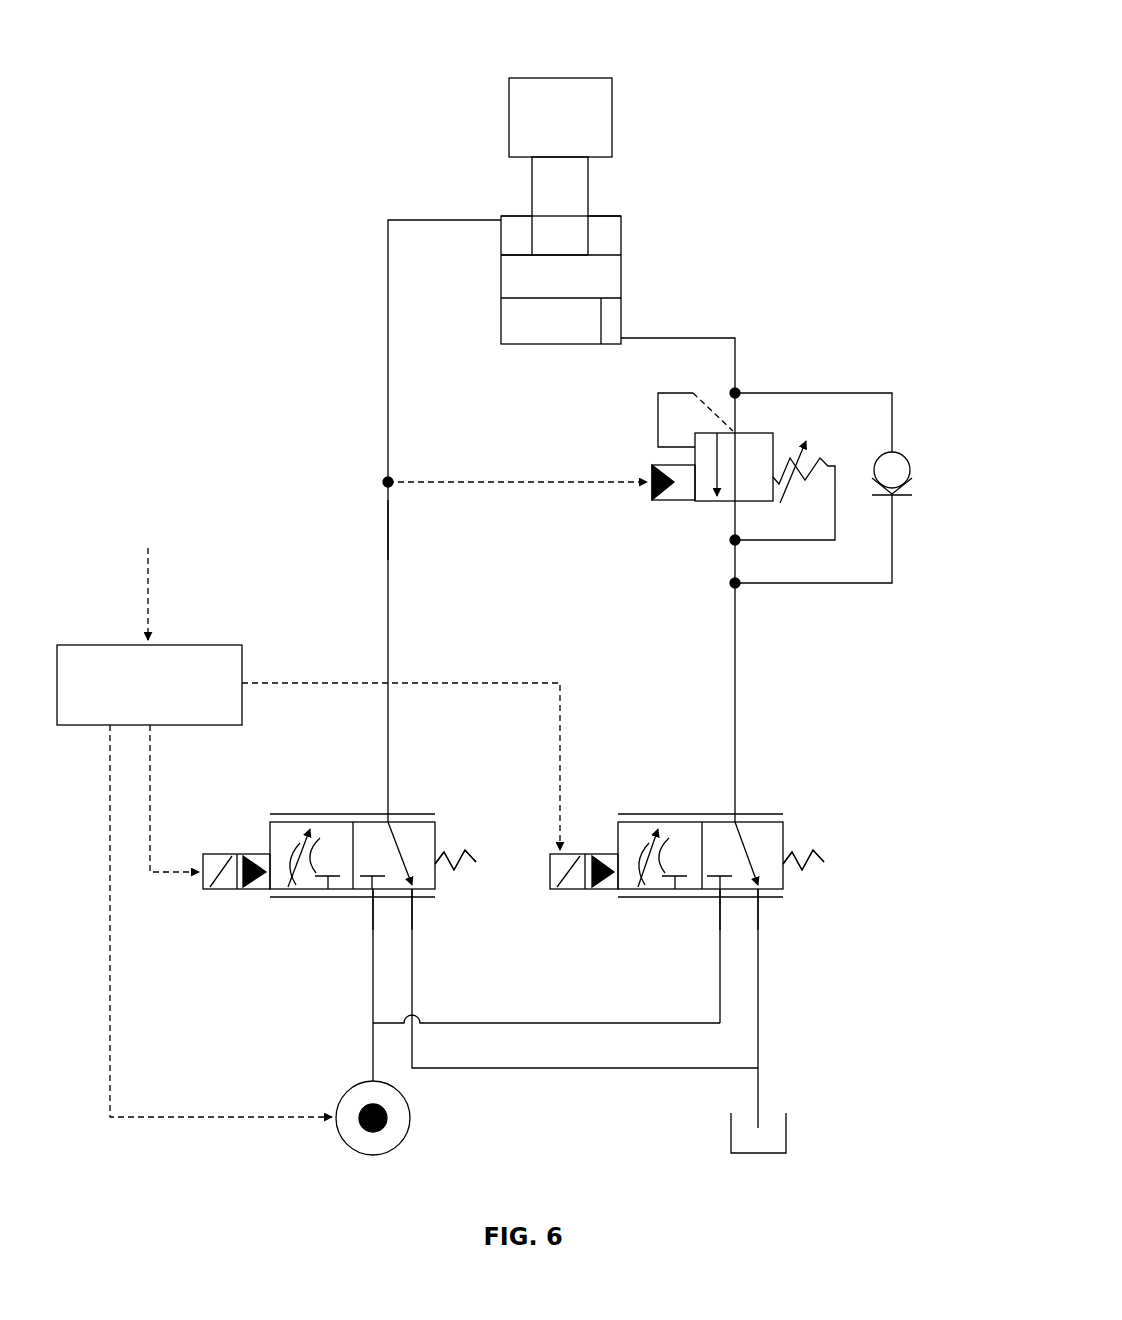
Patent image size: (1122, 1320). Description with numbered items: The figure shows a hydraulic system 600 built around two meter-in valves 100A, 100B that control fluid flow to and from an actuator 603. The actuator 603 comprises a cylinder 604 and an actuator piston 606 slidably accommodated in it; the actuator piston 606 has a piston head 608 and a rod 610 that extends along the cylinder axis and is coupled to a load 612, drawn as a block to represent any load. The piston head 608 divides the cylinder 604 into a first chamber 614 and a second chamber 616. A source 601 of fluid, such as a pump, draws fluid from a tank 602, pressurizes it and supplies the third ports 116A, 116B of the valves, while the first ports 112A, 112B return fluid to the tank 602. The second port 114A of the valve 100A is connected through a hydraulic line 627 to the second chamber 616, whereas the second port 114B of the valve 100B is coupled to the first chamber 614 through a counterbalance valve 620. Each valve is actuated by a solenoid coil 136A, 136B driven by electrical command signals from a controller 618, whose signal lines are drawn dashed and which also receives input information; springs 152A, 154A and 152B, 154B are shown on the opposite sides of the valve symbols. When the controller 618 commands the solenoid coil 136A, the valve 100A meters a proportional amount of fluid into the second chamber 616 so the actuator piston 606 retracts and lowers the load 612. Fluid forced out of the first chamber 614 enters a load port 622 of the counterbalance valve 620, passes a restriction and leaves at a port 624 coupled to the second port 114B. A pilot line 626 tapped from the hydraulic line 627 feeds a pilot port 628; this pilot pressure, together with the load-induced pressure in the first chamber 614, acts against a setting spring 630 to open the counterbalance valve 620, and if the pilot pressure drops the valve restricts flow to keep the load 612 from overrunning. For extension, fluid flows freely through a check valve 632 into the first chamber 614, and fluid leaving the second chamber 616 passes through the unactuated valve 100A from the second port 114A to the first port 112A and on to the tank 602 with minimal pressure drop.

The hydraulic system 600 is at (217, 188).
The source of fluid 601 is at (410, 1125).
The tank 602 is at (787, 1143).
The actuator 603 is at (513, 204).
The cylinder 604 is at (501, 318).
The actuator piston 606 is at (516, 252).
The piston head 608 is at (611, 283).
The rod 610 is at (591, 190).
The load 612 is at (599, 76).
The first chamber 614 is at (623, 323).
The second chamber 616 is at (622, 242).
The controller 618 is at (308, 816).
The counterbalance valve 620 is at (698, 527).
The load port 622 is at (742, 390).
The port 624 is at (744, 588).
The pilot line 626 is at (463, 478).
The hydraulic line 627 is at (387, 540).
The pilot port 628 is at (643, 478).
The setting spring 630 is at (822, 456).
The free-flow check valve 632 is at (912, 472).
The valve 100A is at (277, 922).
The valve 100B is at (627, 913).
The first port 112A is at (427, 901).
The first port 112B is at (778, 904).
The second port 114A is at (380, 811).
The second port 114B is at (728, 811).
The third port 116A is at (361, 904).
The third port 116B is at (701, 907).
The solenoid coil 136A is at (220, 850).
The solenoid coil 136B is at (582, 850).
The spring 152A is at (448, 850).
The spring 154A is at (455, 860).
The spring 152B is at (838, 800).
The spring 154B is at (803, 860).